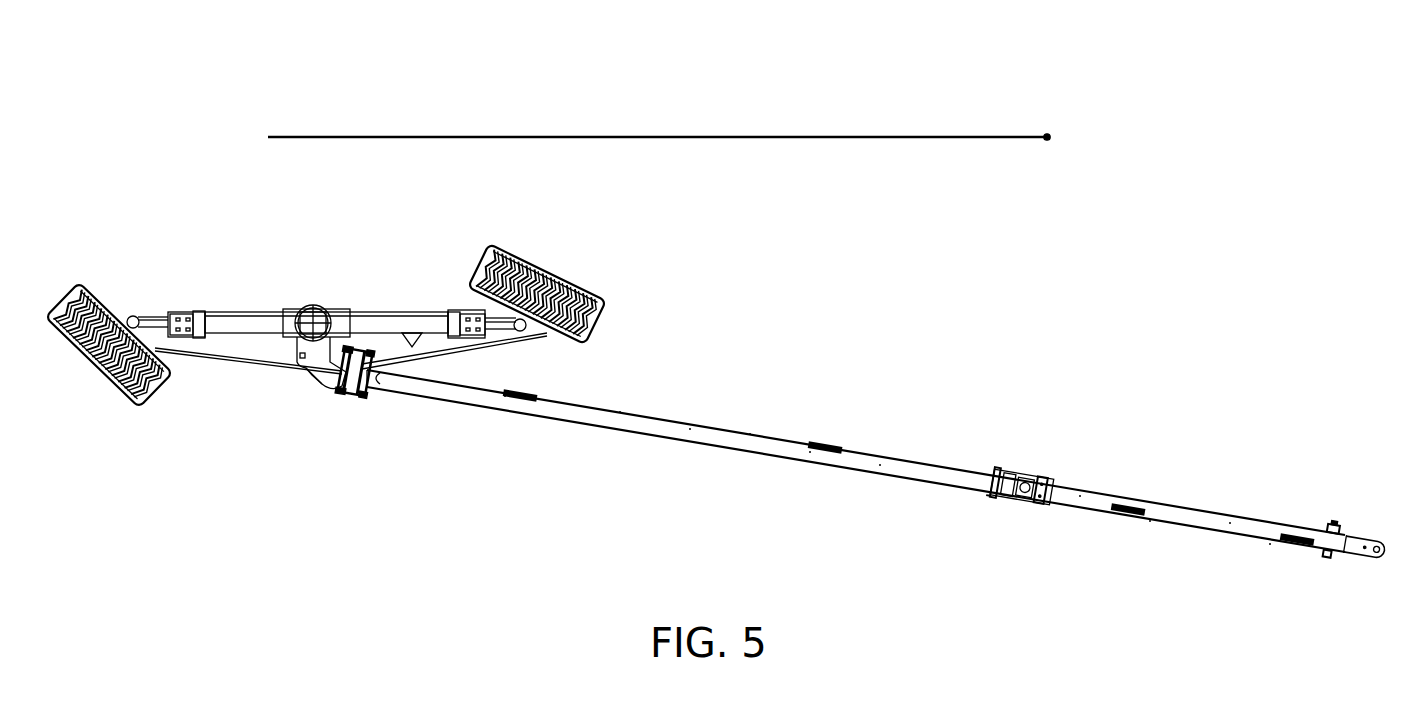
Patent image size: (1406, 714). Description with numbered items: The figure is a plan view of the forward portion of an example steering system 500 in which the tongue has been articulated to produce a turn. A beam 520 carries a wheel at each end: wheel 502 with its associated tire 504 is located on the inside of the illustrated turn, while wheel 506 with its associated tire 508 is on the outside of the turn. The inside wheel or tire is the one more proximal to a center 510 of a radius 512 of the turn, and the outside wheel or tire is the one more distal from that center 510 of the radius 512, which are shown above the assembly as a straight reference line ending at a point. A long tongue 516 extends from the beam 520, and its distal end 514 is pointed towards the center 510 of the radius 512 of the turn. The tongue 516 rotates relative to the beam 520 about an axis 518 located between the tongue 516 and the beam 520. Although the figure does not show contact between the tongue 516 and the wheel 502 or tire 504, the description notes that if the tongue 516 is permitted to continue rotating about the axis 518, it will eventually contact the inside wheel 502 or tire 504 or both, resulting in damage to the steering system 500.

The steering system 500 is at (187, 545).
The wheel 502 is at (548, 265).
The tire 504 is at (537, 294).
The wheel 506 is at (117, 316).
The tire 508 is at (109, 345).
The center 510 is at (1047, 136).
The radius 512 is at (779, 137).
The distal end 514 is at (1356, 548).
The tongue 516 is at (653, 424).
The axis 518 is at (298, 366).
The beam 520 is at (402, 326).